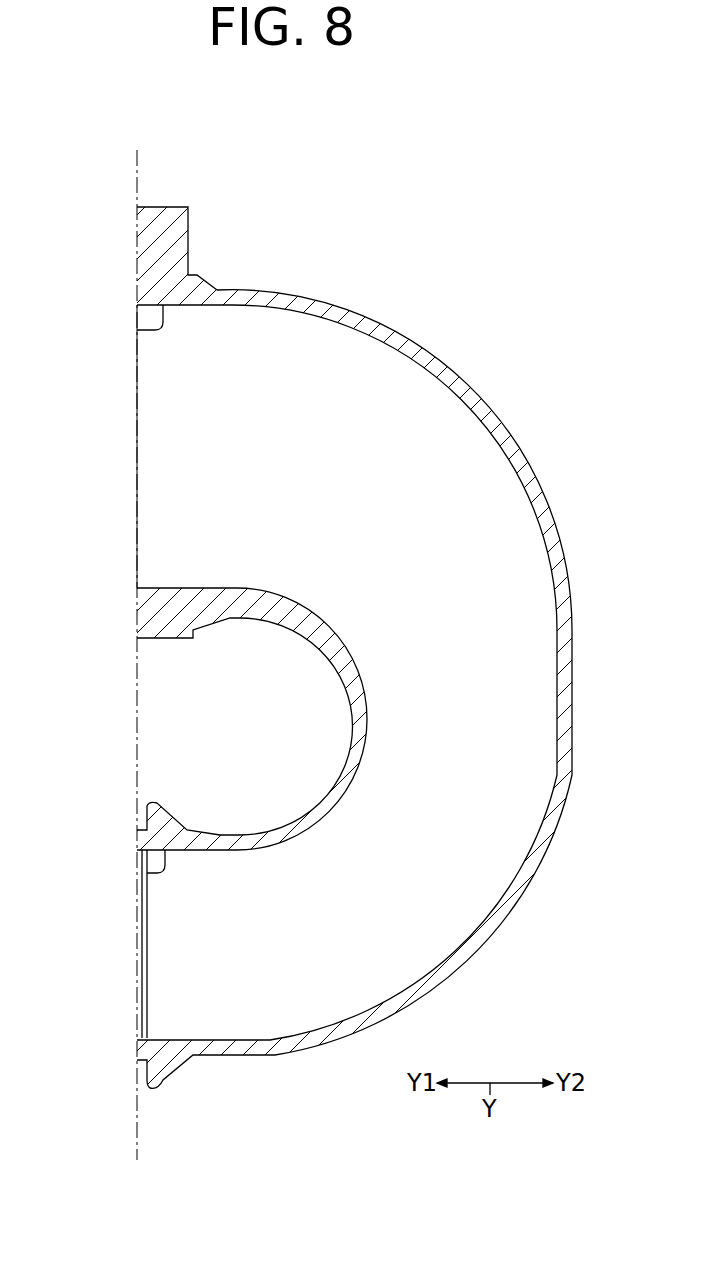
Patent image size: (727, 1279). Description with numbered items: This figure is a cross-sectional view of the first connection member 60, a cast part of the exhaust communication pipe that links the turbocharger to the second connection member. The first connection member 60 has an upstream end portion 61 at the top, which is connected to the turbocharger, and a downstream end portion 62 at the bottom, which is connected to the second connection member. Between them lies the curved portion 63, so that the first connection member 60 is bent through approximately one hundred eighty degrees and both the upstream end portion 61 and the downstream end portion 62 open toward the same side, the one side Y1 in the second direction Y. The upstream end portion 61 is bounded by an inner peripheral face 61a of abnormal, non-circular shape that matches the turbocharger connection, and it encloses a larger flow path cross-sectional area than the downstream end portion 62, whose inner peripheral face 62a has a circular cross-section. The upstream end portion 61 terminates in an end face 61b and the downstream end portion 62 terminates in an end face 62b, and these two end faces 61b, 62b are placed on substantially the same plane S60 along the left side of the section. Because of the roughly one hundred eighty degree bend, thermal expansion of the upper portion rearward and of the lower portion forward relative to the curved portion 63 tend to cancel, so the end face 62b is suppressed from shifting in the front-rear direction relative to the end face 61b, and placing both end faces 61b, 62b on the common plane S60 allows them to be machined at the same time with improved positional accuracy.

The first connection member 60 is at (363, 655).
The upstream end portion 61 is at (190, 275).
The inner peripheral face 61a is at (137, 330).
The end face 61b is at (135, 402).
The downstream end portion 62 is at (178, 1052).
The inner peripheral face 62a is at (150, 873).
The end face 62b is at (135, 945).
The curved portion 63 is at (558, 685).
The plane S60 is at (135, 722).